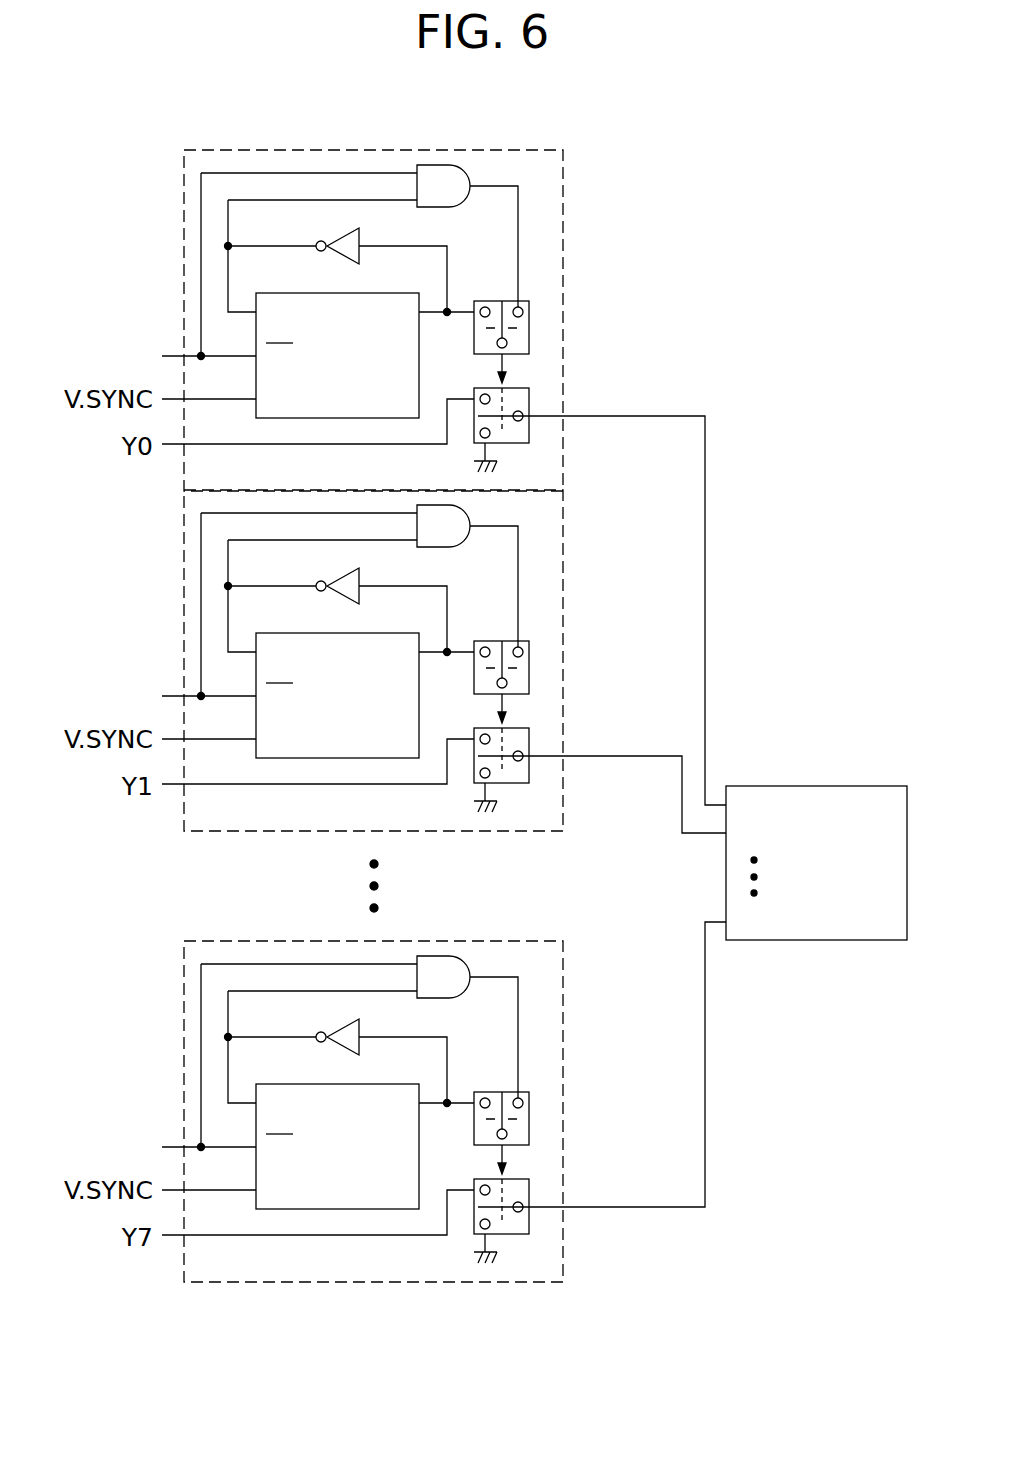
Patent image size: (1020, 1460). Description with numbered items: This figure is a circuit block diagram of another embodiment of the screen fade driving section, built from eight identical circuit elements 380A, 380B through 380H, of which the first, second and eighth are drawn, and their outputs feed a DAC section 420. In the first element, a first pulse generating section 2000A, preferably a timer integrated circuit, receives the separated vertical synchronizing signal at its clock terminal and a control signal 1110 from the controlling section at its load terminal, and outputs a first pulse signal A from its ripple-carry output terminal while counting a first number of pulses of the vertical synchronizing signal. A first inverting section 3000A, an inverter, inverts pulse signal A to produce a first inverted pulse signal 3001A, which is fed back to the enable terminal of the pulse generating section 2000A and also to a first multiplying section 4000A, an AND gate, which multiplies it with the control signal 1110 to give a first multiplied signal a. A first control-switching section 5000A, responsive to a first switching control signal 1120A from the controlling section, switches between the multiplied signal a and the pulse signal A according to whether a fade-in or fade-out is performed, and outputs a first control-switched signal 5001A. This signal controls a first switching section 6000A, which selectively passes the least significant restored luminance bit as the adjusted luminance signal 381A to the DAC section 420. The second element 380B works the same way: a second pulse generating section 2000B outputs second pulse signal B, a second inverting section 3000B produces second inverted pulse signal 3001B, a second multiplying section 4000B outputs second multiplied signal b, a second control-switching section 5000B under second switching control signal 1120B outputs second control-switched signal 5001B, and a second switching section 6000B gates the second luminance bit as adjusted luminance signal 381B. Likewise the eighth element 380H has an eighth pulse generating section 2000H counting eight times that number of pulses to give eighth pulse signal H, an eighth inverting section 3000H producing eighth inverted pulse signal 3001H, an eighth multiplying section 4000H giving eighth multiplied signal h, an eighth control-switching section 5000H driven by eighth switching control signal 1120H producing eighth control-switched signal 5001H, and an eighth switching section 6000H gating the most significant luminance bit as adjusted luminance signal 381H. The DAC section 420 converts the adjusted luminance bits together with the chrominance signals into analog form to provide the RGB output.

The circuit element of screen fade driving section 380A is at (184, 270).
The first pulse generating section 2000A is at (256, 330).
The first inverting section 3000A is at (340, 238).
The first inverted pulse signal 3001A is at (277, 246).
The first multiplying section 4000A is at (470, 172).
The first control-switching section 5000A is at (529, 305).
The first switching control signal 1120A is at (537, 328).
The first control-switched signal 5001A is at (503, 364).
The first switching section 6000A is at (529, 434).
The adjusted luminance signal 381A is at (705, 630).
The first multiplied signal a is at (518, 210).
The first pulse signal A is at (460, 312).
The circuit element of screen fade driving section 380B is at (316, 660).
The second pulse generating section 2000B is at (245, 695).
The second inverting section 3000B is at (259, 578).
The second inverted pulse signal 3001B is at (194, 570).
The second multiplying section 4000B is at (541, 525).
The second control-switching section 5000B is at (570, 656).
The second switching control signal 1120B is at (601, 668).
The second control-switched signal 5001B is at (582, 707).
The second switching section 6000B is at (570, 770).
The adjusted luminance signal 381B is at (627, 820).
The second multiplied signal b is at (559, 552).
The second pulse signal B is at (531, 613).
The circuit element of screen fade driving section 380H is at (315, 1111).
The eighth pulse generating section 2000H is at (245, 1146).
The eighth inverting section 3000H is at (259, 1029).
The eighth inverted pulse signal 3001H is at (193, 1021).
The eighth multiplying section 4000H is at (542, 976).
The eighth control-switching section 5000H is at (570, 1107).
The eighth switching control signal 1120H is at (602, 1119).
The eighth control-switched signal 5001H is at (582, 1158).
The eighth switching section 6000H is at (570, 1221).
The adjusted luminance signal 381H is at (694, 1064).
The eighth multiplied signal h is at (559, 1003).
The eighth pulse signal H is at (532, 1064).
The control signal 1110 is at (172, 750).
The DAC section 420 is at (817, 786).